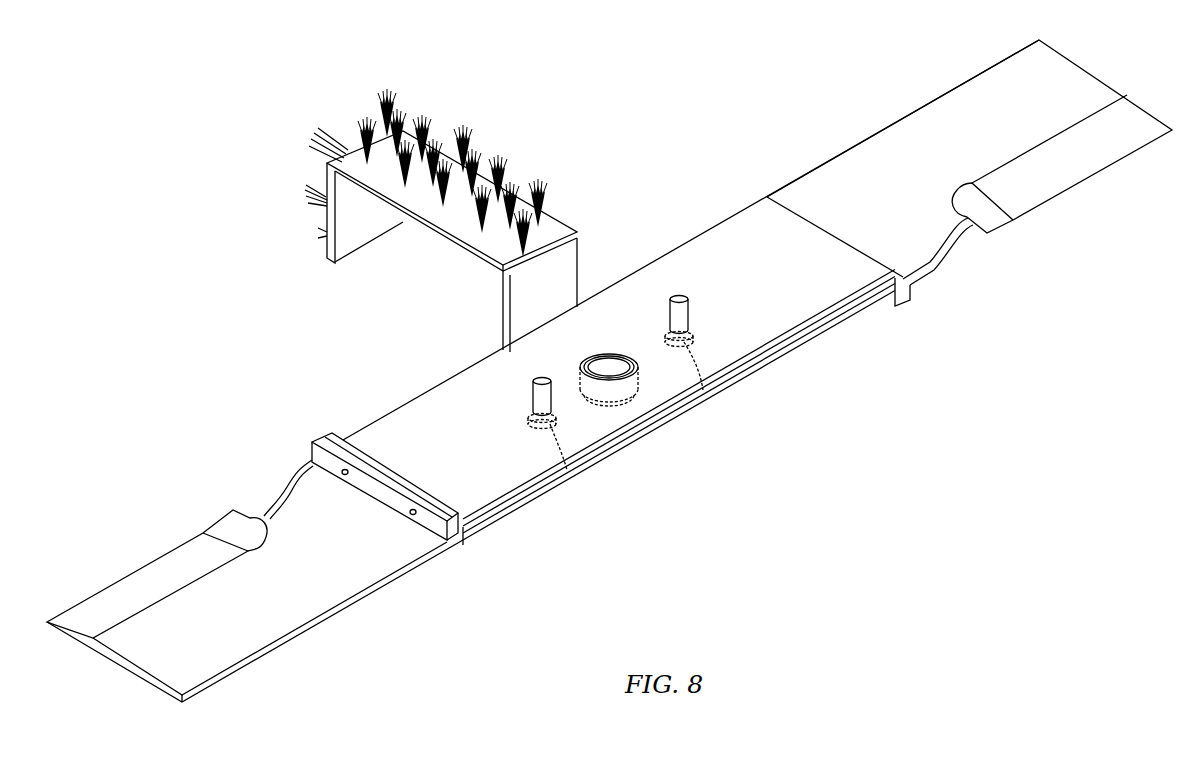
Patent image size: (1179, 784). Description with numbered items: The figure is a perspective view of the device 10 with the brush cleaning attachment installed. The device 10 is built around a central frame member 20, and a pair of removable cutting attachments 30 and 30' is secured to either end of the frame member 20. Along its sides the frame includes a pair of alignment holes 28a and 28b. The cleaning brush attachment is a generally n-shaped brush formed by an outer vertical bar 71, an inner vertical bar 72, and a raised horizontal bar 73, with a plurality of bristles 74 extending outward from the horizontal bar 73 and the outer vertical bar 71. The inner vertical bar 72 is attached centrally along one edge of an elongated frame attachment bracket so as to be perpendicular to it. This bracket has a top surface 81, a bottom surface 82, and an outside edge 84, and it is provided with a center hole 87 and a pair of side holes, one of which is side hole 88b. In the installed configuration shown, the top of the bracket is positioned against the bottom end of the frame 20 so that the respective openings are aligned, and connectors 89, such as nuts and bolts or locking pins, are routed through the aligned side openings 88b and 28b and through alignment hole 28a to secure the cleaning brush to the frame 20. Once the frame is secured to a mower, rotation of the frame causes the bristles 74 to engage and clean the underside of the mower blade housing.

The device 10 is at (182, 243).
The central frame member 20 is at (700, 485).
The removable cutting attachment 30 is at (255, 581).
The removable cutting attachment 30' is at (969, 158).
The alignment hole 28a is at (533, 406).
The alignment hole 28b is at (668, 313).
The outer vertical bar 71 is at (327, 258).
The inner vertical bar 72 is at (563, 259).
The raised horizontal bar 73 is at (447, 155).
The bristles 74 is at (372, 108).
The top surface 81 is at (462, 457).
The bottom surface 82 is at (826, 333).
The outside edge 84 is at (760, 363).
The center hole 87 is at (612, 352).
The side hole 88b is at (567, 472).
The connectors 89 is at (599, 332).